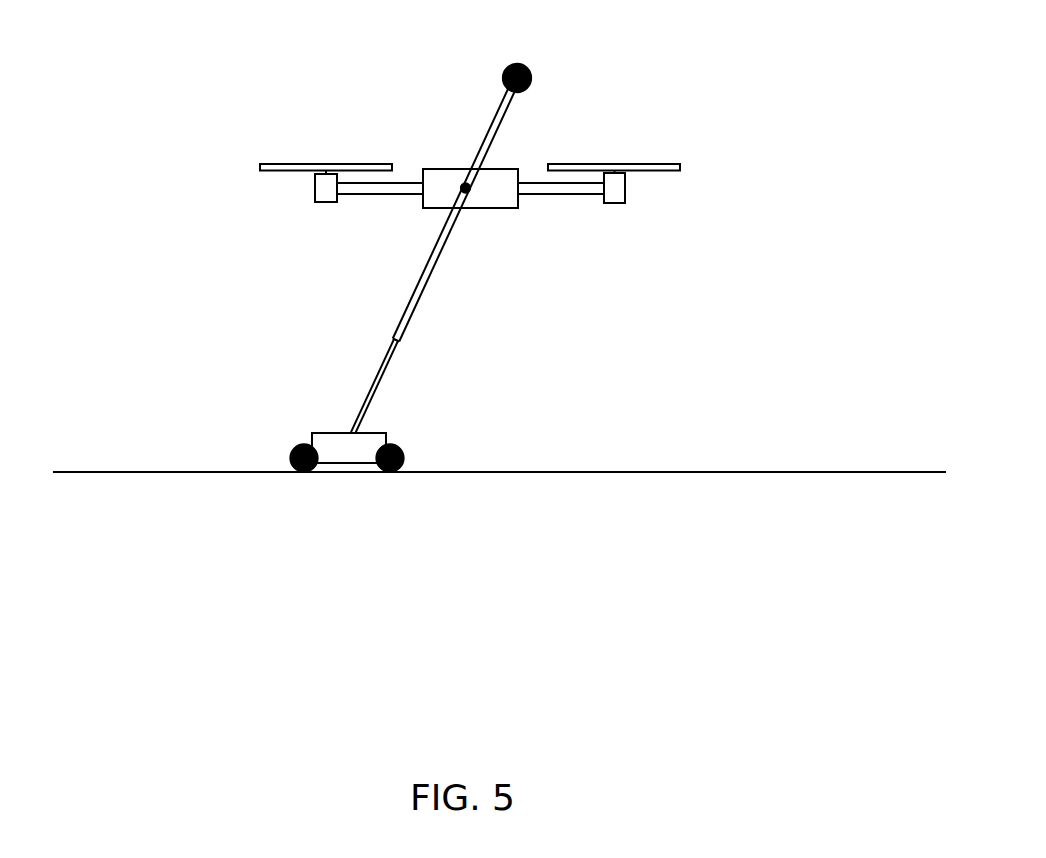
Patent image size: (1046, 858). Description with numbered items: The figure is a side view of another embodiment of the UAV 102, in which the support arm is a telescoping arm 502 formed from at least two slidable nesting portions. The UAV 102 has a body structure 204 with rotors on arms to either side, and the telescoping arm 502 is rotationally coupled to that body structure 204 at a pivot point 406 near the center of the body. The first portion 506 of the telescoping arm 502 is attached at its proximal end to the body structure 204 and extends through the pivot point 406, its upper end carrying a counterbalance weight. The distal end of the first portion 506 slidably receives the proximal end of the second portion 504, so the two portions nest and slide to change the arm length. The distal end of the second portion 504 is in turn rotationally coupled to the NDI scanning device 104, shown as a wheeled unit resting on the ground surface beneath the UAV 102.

The UAV 102 is at (610, 78).
The body structure 204 is at (450, 168).
The pivot point 406 is at (470, 190).
The first portion 506 is at (410, 300).
The second portion 504 is at (364, 400).
The NDI scanning device 104 is at (387, 434).
The telescoping arm 502 is at (534, 336).